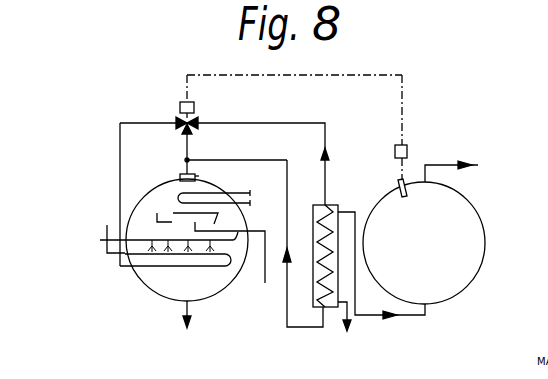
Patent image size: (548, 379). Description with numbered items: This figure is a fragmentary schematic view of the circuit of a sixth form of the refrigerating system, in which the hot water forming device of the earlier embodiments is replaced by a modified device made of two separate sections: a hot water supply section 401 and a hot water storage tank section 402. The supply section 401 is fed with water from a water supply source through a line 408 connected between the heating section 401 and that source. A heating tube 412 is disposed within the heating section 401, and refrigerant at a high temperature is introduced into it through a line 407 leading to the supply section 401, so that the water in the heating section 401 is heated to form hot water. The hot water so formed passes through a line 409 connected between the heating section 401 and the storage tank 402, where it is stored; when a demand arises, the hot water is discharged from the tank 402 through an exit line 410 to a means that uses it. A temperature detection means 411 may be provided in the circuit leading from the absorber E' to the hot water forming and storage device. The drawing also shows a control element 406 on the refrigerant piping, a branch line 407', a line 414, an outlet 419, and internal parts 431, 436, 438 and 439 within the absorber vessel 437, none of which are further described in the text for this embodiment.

The hot water supply section 401 is at (313, 212).
The hot water storage tank section 402 is at (486, 237).
The three-way valve 406 is at (192, 118).
The line 407 is at (238, 182).
The branch line 407' is at (251, 151).
The line 408 is at (190, 148).
The line 409 is at (418, 318).
The exit line 410 is at (455, 165).
The temperature detection means 411 is at (424, 135).
The heating tube 412 is at (313, 290).
The line 414 is at (266, 270).
The outlet 419 is at (191, 308).
The spray header 431 is at (232, 234).
The heating coil 436 is at (156, 267).
The vessel 437 is at (119, 172).
The inlet nozzle 438 is at (181, 175).
The tube 439 is at (245, 194).
The absorber E' is at (219, 177).